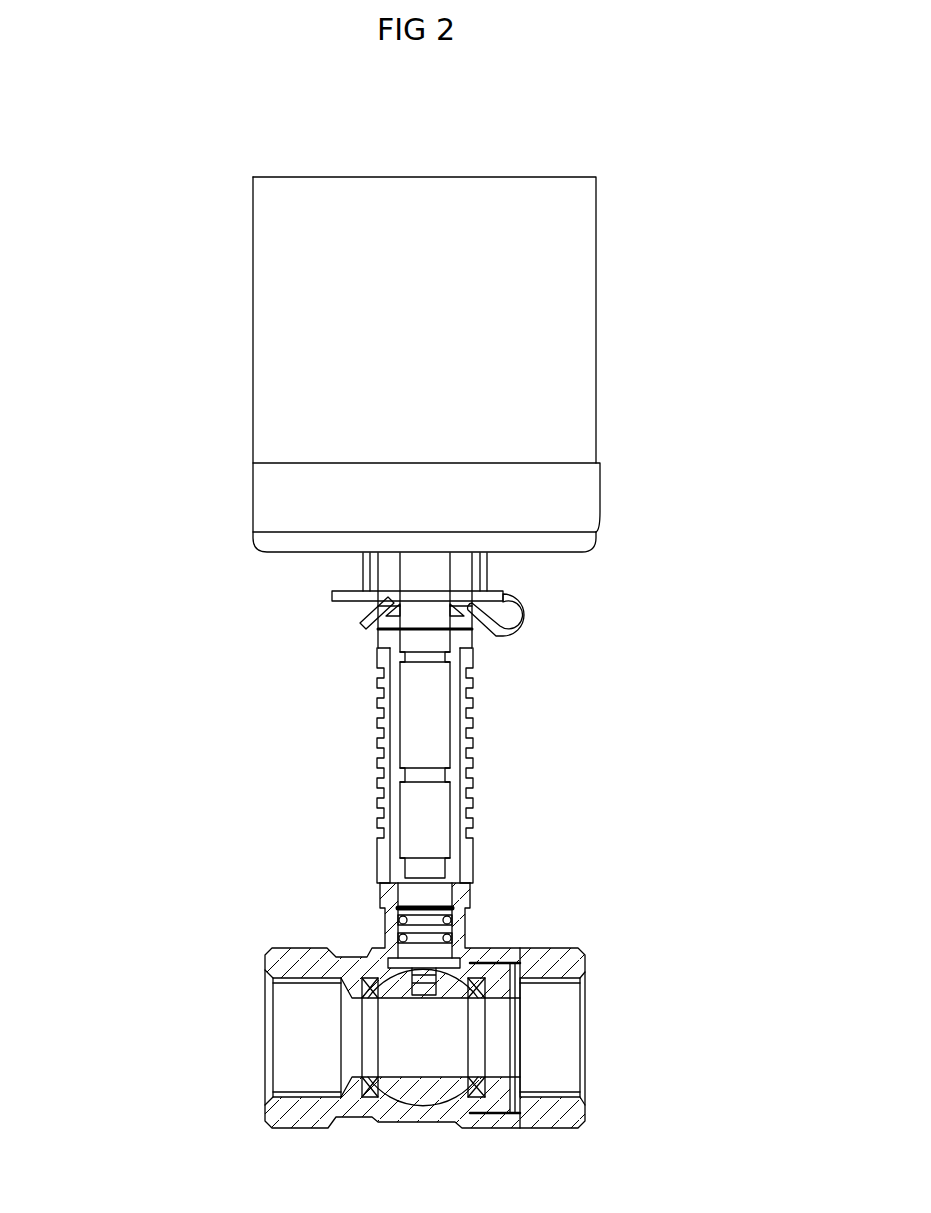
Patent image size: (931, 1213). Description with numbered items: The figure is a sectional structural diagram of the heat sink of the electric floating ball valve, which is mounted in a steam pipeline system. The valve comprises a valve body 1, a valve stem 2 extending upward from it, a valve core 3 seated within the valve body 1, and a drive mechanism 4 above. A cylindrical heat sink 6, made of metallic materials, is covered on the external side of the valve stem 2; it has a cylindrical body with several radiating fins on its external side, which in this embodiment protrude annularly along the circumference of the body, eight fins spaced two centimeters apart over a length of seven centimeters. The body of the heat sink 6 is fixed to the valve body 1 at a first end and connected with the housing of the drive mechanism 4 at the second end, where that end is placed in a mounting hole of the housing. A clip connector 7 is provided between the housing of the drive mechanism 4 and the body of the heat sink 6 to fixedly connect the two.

The valve body 1 is at (535, 958).
The valve stem 2 is at (420, 692).
The valve core 3 is at (405, 1085).
The drive mechanism 4 is at (510, 342).
The heat sink 6 is at (465, 753).
The clip connector 7 is at (518, 597).